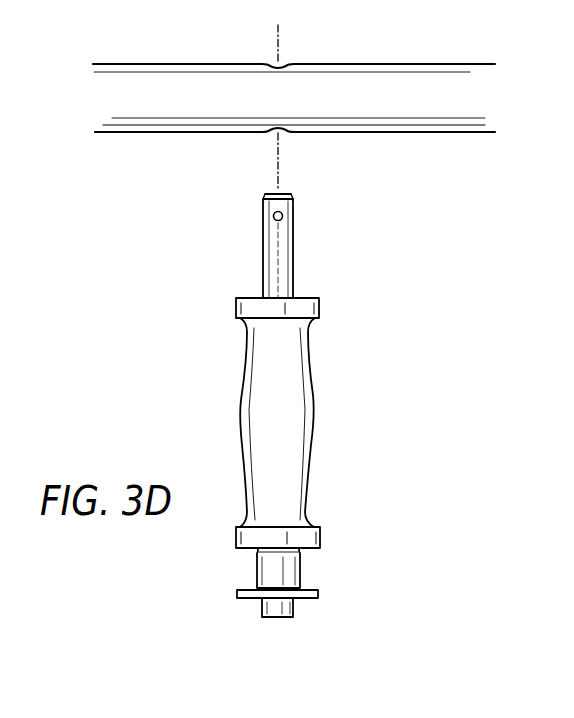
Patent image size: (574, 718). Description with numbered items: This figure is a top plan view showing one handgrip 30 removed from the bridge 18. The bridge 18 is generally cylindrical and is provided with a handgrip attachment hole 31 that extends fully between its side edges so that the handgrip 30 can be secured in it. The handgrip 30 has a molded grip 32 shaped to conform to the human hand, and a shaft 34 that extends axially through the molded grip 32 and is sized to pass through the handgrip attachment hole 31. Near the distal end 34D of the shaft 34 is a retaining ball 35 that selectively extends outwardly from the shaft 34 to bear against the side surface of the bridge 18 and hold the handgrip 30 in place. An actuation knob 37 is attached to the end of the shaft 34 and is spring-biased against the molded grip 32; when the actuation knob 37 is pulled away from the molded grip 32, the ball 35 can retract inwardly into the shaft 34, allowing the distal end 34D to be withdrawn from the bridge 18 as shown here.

The bridge 18 is at (183, 63).
The handgrip attachment hole 31 is at (284, 63).
The handgrip 30 is at (275, 423).
The molded grip 32 is at (312, 452).
The shaft 34 is at (263, 250).
The distal end of shaft 34D is at (290, 192).
The retaining ball 35 is at (283, 216).
The actuation knob 37 is at (300, 568).